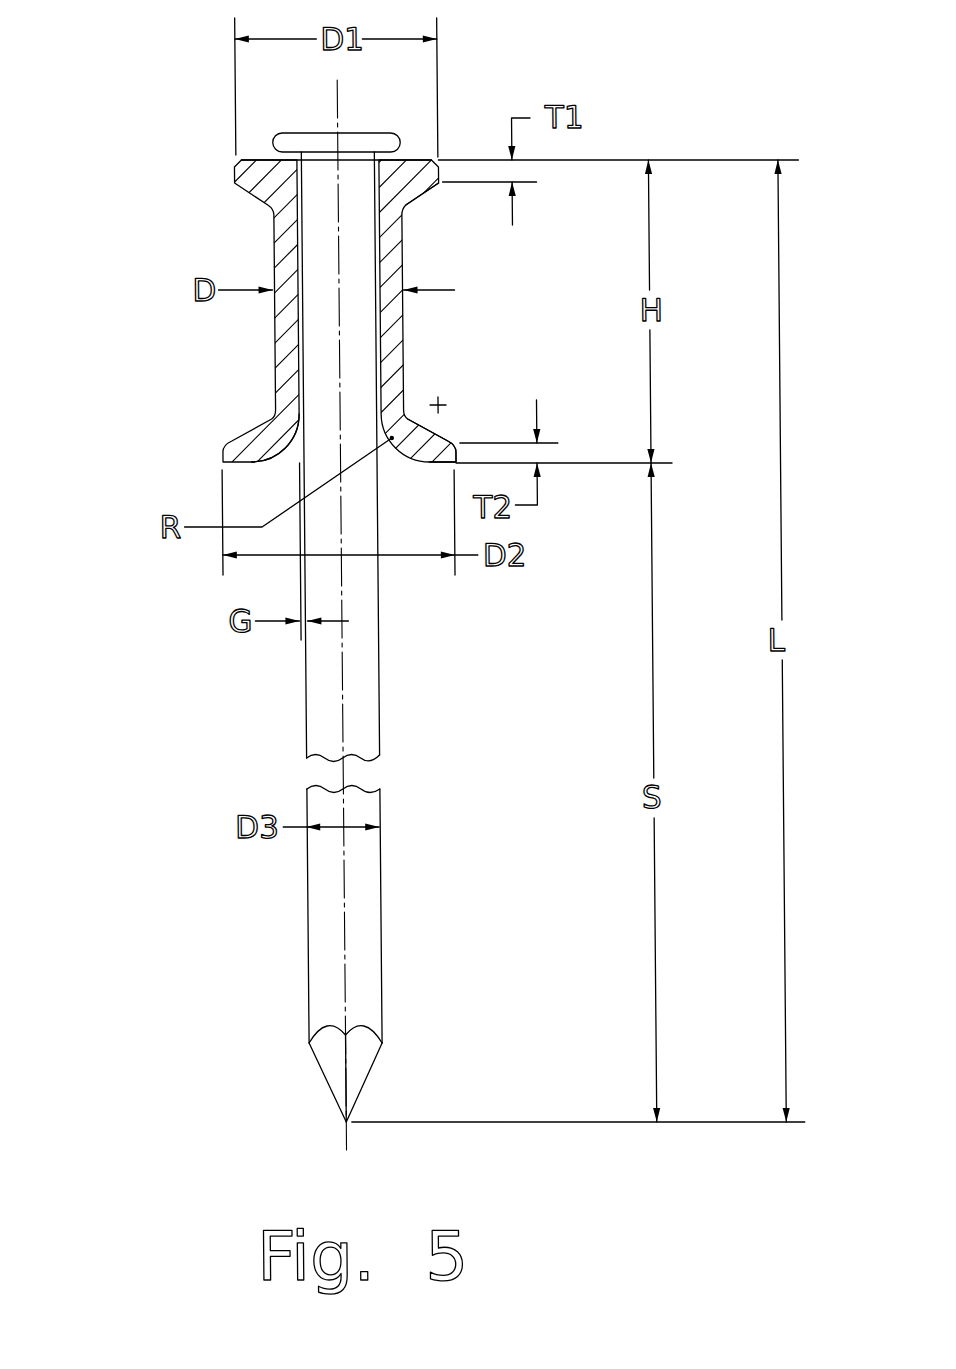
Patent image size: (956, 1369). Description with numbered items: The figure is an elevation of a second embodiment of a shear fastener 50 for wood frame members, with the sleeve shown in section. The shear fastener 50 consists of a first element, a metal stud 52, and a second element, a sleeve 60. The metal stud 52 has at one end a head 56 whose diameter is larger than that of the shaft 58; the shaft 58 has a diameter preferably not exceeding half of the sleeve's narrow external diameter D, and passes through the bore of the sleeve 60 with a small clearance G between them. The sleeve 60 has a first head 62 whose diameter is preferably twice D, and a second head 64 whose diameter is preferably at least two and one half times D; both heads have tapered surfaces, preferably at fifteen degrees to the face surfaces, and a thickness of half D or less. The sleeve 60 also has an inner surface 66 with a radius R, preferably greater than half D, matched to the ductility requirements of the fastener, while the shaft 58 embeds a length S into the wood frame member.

The shear fastener 50 is at (222, 172).
The metal stud 52 is at (357, 561).
The head 56 is at (374, 141).
The shaft 58 is at (351, 722).
The sleeve 60 is at (407, 162).
The first head 62 is at (403, 190).
The second head 64 is at (424, 443).
The inner surface 66 is at (282, 495).